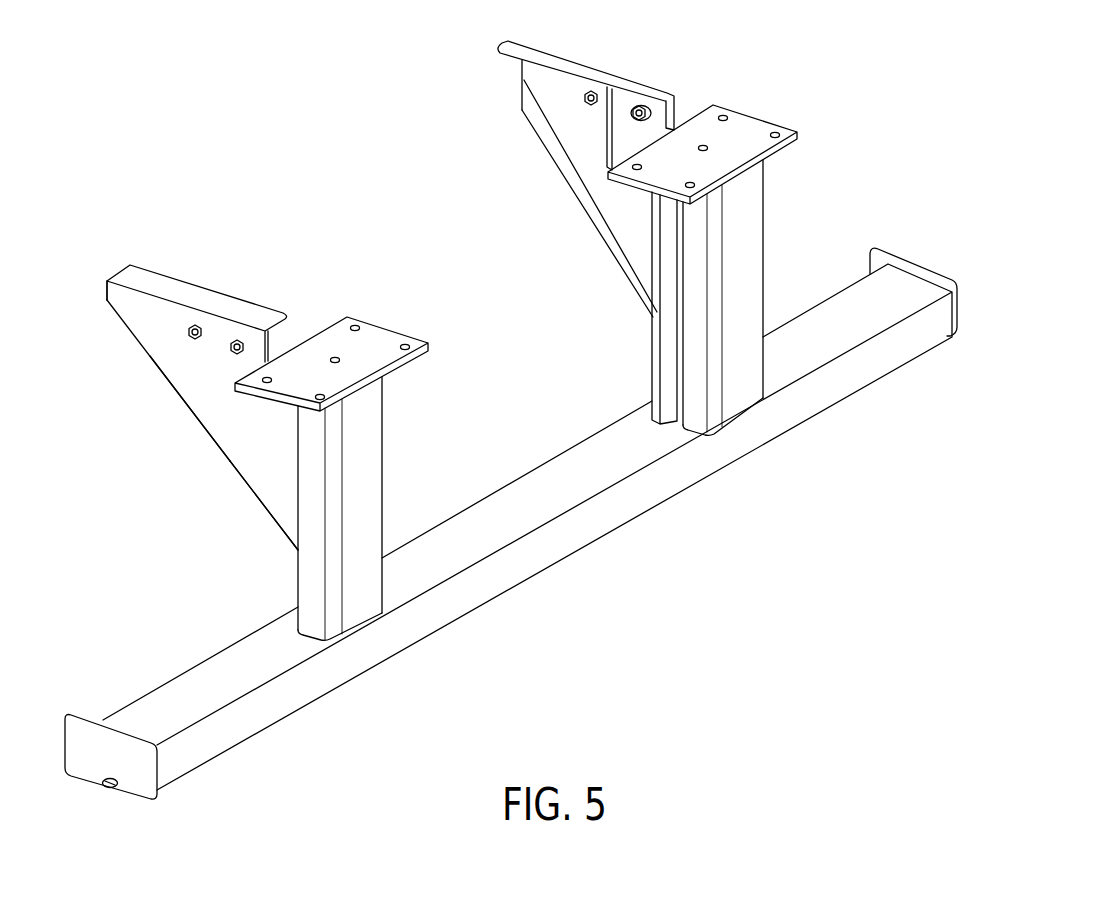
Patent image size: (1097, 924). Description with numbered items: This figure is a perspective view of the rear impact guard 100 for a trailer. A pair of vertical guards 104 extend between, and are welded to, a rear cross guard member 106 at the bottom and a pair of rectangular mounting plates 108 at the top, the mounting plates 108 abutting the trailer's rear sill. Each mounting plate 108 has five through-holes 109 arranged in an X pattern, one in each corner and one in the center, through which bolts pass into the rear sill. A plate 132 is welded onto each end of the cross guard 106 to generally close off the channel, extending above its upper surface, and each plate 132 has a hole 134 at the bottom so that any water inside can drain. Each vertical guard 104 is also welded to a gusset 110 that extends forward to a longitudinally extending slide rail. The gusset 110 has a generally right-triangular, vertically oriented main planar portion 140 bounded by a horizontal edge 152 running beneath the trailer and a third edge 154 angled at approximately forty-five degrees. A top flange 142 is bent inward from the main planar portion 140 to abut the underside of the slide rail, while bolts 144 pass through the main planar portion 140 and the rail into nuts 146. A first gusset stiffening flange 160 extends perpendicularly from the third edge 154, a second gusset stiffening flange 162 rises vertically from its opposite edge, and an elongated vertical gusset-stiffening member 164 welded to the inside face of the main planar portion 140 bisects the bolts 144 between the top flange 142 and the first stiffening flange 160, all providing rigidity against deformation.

The rear impact guard 100 is at (630, 581).
The vertical guards 104 is at (357, 602).
The rear cross guard member 106 is at (505, 577).
The rectangular mounting plates 108 is at (332, 344).
The through-holes 109 is at (406, 345).
The gusset 110 is at (262, 475).
The plate 132 is at (72, 762).
The hole 134 is at (109, 791).
The main planar portion 140 is at (193, 388).
The top flange 142 is at (187, 288).
The bolts 144 is at (590, 104).
The nuts 146 is at (647, 107).
The horizontal edge 152 is at (146, 300).
The third edge 154 is at (212, 445).
The first gusset stiffening flange 160 is at (523, 108).
The second gusset stiffening flange 162 is at (573, 173).
The vertical gusset-stiffening member 164 is at (653, 115).